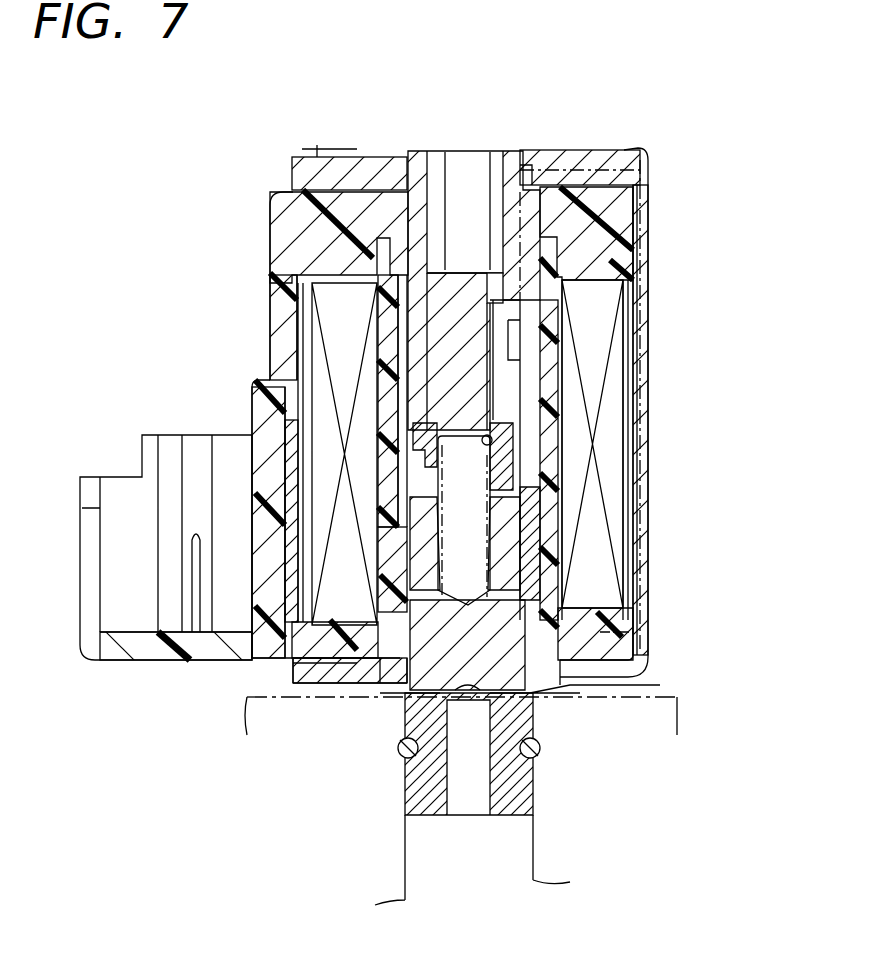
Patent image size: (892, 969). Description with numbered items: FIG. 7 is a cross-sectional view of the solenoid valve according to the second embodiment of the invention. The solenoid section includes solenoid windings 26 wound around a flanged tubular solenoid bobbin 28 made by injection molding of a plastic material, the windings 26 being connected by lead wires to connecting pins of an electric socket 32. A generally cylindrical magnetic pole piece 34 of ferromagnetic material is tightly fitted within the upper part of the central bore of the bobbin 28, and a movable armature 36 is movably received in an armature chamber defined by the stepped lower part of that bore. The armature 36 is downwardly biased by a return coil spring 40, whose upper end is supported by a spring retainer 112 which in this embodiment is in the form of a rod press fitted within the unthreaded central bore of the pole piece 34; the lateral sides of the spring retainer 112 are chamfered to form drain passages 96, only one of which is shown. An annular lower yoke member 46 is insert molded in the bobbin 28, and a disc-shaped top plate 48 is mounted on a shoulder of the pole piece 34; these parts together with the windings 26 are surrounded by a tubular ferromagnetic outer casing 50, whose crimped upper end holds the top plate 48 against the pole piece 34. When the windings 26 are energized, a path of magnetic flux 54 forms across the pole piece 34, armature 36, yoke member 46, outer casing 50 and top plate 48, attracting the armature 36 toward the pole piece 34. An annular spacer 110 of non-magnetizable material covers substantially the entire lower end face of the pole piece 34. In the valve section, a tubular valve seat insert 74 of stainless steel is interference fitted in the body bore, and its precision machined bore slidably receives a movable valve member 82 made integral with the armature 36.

The solenoid windings 26 is at (320, 370).
The solenoid bobbin 28 is at (390, 345).
The electric socket 32 is at (148, 660).
The magnetic pole piece 34 is at (420, 150).
The armature 36 is at (510, 528).
The return coil spring 40 is at (488, 455).
The lower yoke member 46 is at (290, 658).
The top plate 48 is at (325, 158).
The outer casing 50 is at (648, 250).
The path of magnetic flux 54 is at (650, 212).
The valve seat insert 74 is at (507, 612).
The movable valve member 82 is at (400, 735).
The drain passages 96 is at (490, 300).
The annular spacer 110 is at (415, 440).
The spring retainer 112 is at (455, 300).